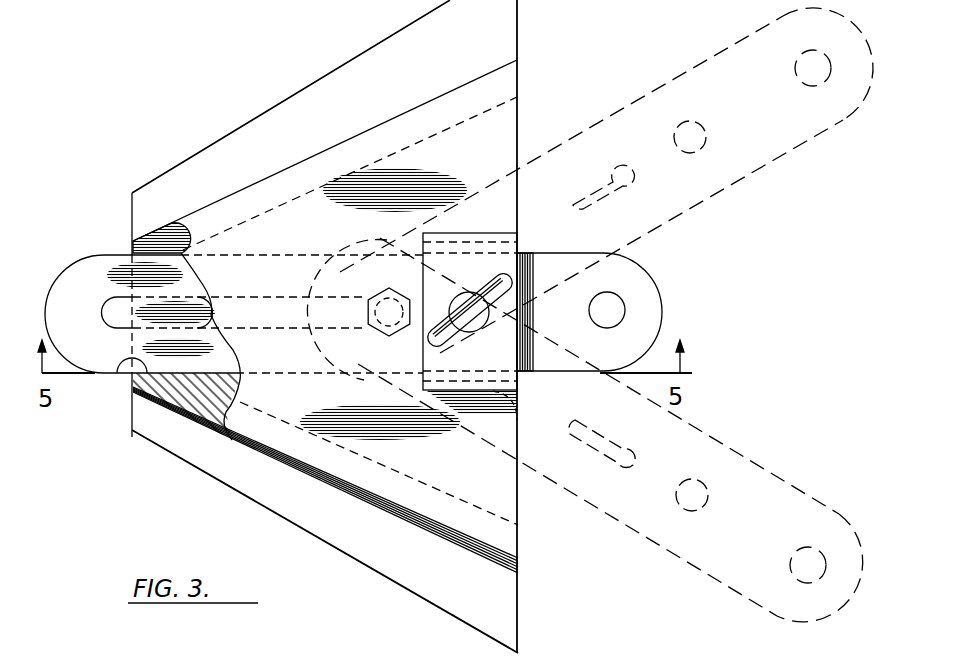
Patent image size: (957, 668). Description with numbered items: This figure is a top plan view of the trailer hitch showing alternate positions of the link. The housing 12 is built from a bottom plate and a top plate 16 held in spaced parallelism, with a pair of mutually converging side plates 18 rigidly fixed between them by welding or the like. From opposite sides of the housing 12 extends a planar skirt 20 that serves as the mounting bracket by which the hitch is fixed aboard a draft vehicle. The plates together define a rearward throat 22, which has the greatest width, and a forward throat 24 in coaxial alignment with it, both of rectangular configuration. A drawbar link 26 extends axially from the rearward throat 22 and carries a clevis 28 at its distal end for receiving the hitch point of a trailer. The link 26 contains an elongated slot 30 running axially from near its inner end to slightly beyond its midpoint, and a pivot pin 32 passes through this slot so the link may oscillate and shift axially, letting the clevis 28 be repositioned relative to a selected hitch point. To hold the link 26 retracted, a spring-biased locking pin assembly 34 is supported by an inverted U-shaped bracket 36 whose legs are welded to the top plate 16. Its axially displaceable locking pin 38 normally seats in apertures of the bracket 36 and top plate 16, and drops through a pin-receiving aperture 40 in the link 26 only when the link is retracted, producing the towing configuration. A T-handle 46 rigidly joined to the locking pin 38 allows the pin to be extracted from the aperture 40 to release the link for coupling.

The housing 12 is at (522, 122).
The top plate 16 is at (328, 237).
The side plates 18 is at (452, 107).
The skirt 20 is at (314, 110).
The throat 22 is at (523, 512).
The throat 24 is at (130, 372).
The drawbar link 26 is at (115, 267).
The clevis 28 is at (663, 300).
The elongated slot 30 is at (208, 312).
The pivot pin 32 is at (372, 305).
The spring-biased locking pin assembly 34 is at (503, 226).
The bracket 36 is at (512, 412).
The locking pin 38 is at (468, 292).
The pin-receiving aperture 40 is at (708, 137).
The T-handle 46 is at (432, 347).